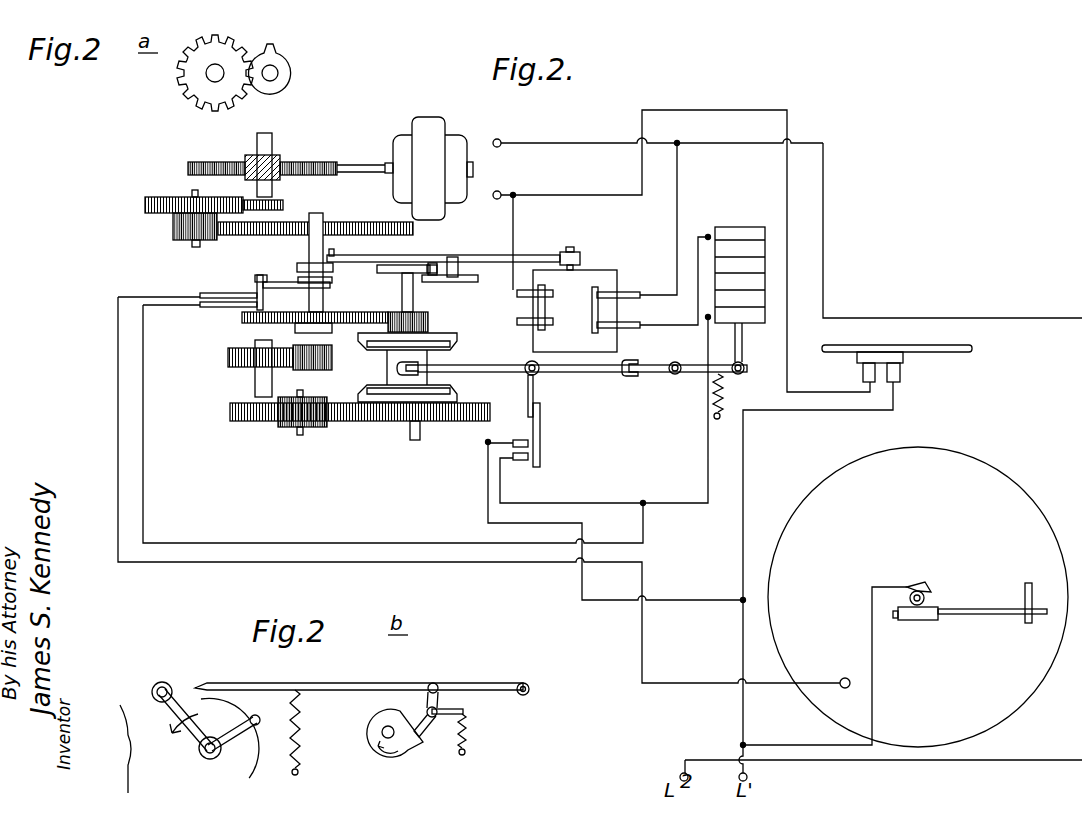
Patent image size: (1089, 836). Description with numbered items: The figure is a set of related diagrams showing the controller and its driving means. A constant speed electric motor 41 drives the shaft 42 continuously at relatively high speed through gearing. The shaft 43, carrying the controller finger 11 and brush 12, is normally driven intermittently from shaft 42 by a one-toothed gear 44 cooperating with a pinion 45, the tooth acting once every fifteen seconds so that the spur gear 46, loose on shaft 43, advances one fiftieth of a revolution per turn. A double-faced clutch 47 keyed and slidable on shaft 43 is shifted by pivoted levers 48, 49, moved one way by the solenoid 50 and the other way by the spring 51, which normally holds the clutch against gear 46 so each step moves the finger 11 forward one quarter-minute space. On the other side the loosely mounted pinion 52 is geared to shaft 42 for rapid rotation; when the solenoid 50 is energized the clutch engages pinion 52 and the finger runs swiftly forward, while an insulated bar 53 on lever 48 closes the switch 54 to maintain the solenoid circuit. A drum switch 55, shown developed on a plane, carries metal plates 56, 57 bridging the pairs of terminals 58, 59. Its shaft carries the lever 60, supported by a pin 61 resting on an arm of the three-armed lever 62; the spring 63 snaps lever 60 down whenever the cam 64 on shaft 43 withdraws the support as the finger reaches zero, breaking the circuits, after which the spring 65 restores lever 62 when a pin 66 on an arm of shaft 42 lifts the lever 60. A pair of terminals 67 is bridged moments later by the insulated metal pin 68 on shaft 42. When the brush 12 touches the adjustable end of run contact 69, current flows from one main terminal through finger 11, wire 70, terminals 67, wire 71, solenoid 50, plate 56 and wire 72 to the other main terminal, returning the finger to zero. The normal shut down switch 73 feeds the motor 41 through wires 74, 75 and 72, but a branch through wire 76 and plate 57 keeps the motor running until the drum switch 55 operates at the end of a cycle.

In FIG. 2, the controller finger 11 is at (973, 611).
In FIG. 2, the brush 12 is at (1028, 582).
In FIG. 2, the electric motor 41 is at (430, 127).
In FIG. 2, the shaft 42 is at (312, 242).
In FIG. 2B, the shaft 42 is at (200, 757).
In FIG. 2B, the shaft 43 is at (383, 733).
In FIG. 2A, the one-toothed gear 44 is at (288, 70).
In FIG. 2, the one-toothed gear 44 is at (303, 366).
In FIG. 2A, the pinion 45 is at (200, 88).
In FIG. 2, the pinion 45 is at (230, 363).
In FIG. 2, the spur gear 46 is at (463, 422).
In FIG. 2, the double-faced clutch 47 is at (422, 358).
In FIG. 2, the pivoted lever 48 is at (582, 377).
In FIG. 2, the pivoted lever 49 is at (658, 375).
In FIG. 2, the solenoid 50 is at (755, 267).
In FIG. 2, the spring 51 is at (727, 383).
In FIG. 2, the pinion 52 is at (430, 318).
In FIG. 2, the insulated bar 53 is at (540, 443).
In FIG. 2, the switch 54 is at (513, 443).
In FIG. 2, the drum switch 55 is at (607, 282).
In FIG. 2, the metal plate 56 is at (598, 312).
In FIG. 2, the metal plate 57 is at (561, 306).
In FIG. 2, the pair of terminals 58 is at (640, 330).
In FIG. 2, the pair of terminals 59 is at (518, 298).
In FIG. 2, the lever 60 is at (527, 255).
In FIG. 2B, the lever 60 is at (338, 685).
In FIG. 2, the pin 61 is at (450, 253).
In FIG. 2B, the pin 61 is at (436, 685).
In FIG. 2B, the three-armed lever 62 is at (470, 690).
In FIG. 2B, the spring 63 is at (305, 728).
In FIG. 2, the cam 64 is at (393, 273).
In FIG. 2B, the cam 64 is at (402, 755).
In FIG. 2B, the spring 65 is at (472, 737).
In FIG. 2, the pin 66 is at (352, 246).
In FIG. 2B, the pin 66 is at (254, 715).
In FIG. 2, the pair of terminals 67 is at (223, 303).
In FIG. 2B, the pair of terminals 67 is at (114, 732).
In FIG. 2, the insulated metal pin 68 is at (260, 297).
In FIG. 2B, the insulated metal pin 68 is at (162, 682).
In FIG. 2, the end of run contact 69 is at (838, 676).
In FIG. 2, the wire 70 is at (393, 562).
In FIG. 2, the wire 71 is at (350, 540).
In FIG. 2, the wire 72 is at (805, 145).
In FIG. 2, the normal shut down switch 73 is at (887, 350).
In FIG. 2, the wire 74 is at (745, 481).
In FIG. 2, the wire 75 is at (690, 112).
In FIG. 2, the wire 76 is at (673, 598).